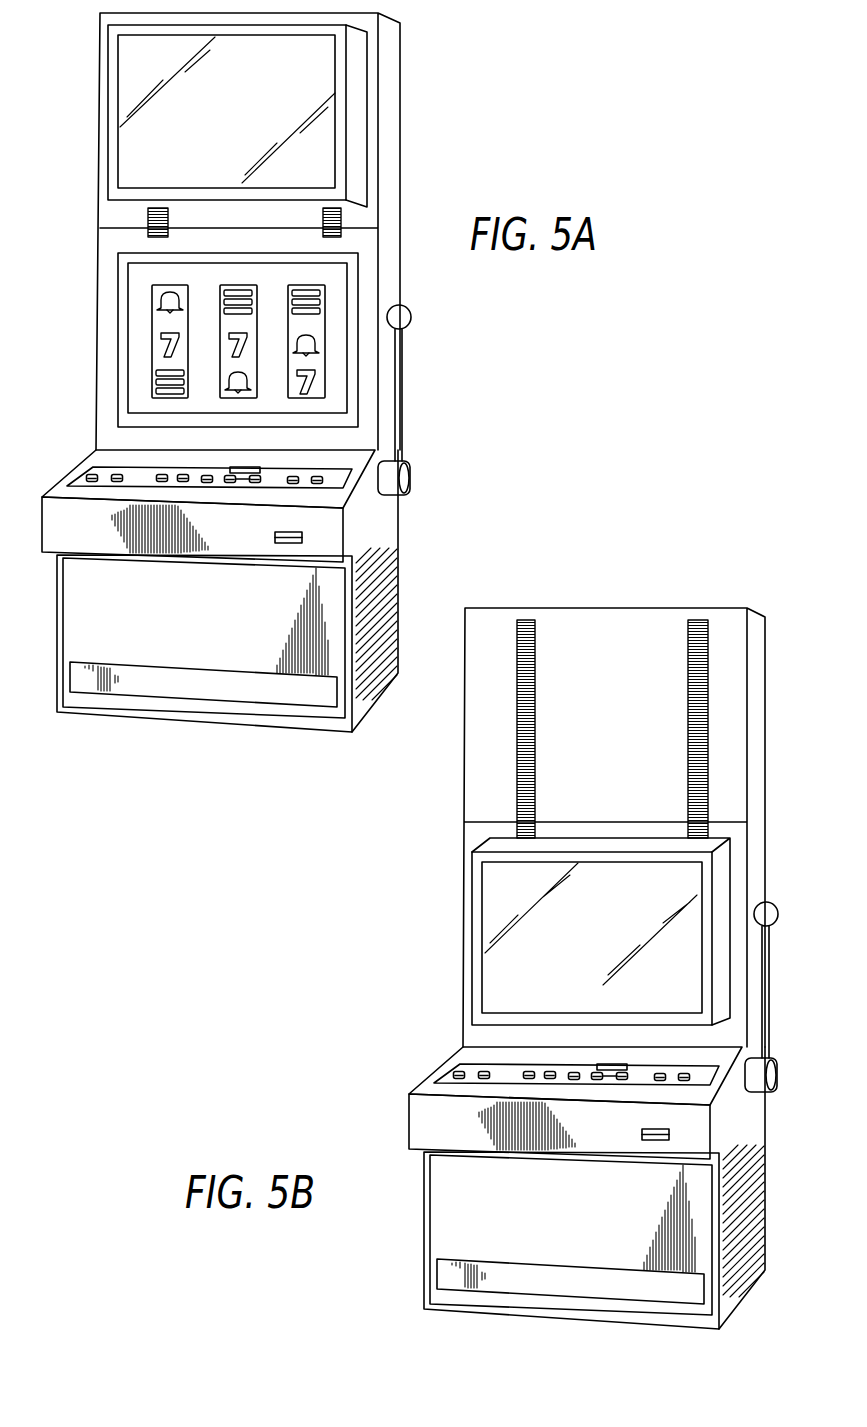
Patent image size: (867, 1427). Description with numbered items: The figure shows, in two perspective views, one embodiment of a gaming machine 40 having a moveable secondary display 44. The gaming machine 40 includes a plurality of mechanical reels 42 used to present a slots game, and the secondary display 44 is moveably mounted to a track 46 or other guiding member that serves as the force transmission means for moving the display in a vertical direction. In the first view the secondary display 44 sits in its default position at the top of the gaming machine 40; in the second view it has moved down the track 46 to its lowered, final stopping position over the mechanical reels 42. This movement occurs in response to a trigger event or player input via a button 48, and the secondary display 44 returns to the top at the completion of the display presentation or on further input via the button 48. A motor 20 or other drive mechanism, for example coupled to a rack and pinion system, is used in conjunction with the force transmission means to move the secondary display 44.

In FIG. 5A, the gaming machine 40 is at (424, 96).
In FIG. 5B, the gaming machine 40 is at (780, 650).
In FIG. 5A, the secondary display 44 is at (298, 139).
In FIG. 5B, the secondary display 44 is at (663, 877).
In FIG. 5A, the track 46 is at (147, 220).
In FIG. 5B, the track 46 is at (535, 708).
In FIG. 5A, the mechanical reels 42 is at (150, 322).
In FIG. 5A, the button 48 is at (92, 470).
In FIG. 5B, the button 48 is at (459, 1068).
In FIG. 5A, the motor 20 is at (318, 474).
In FIG. 5B, the motor 20 is at (684, 1070).